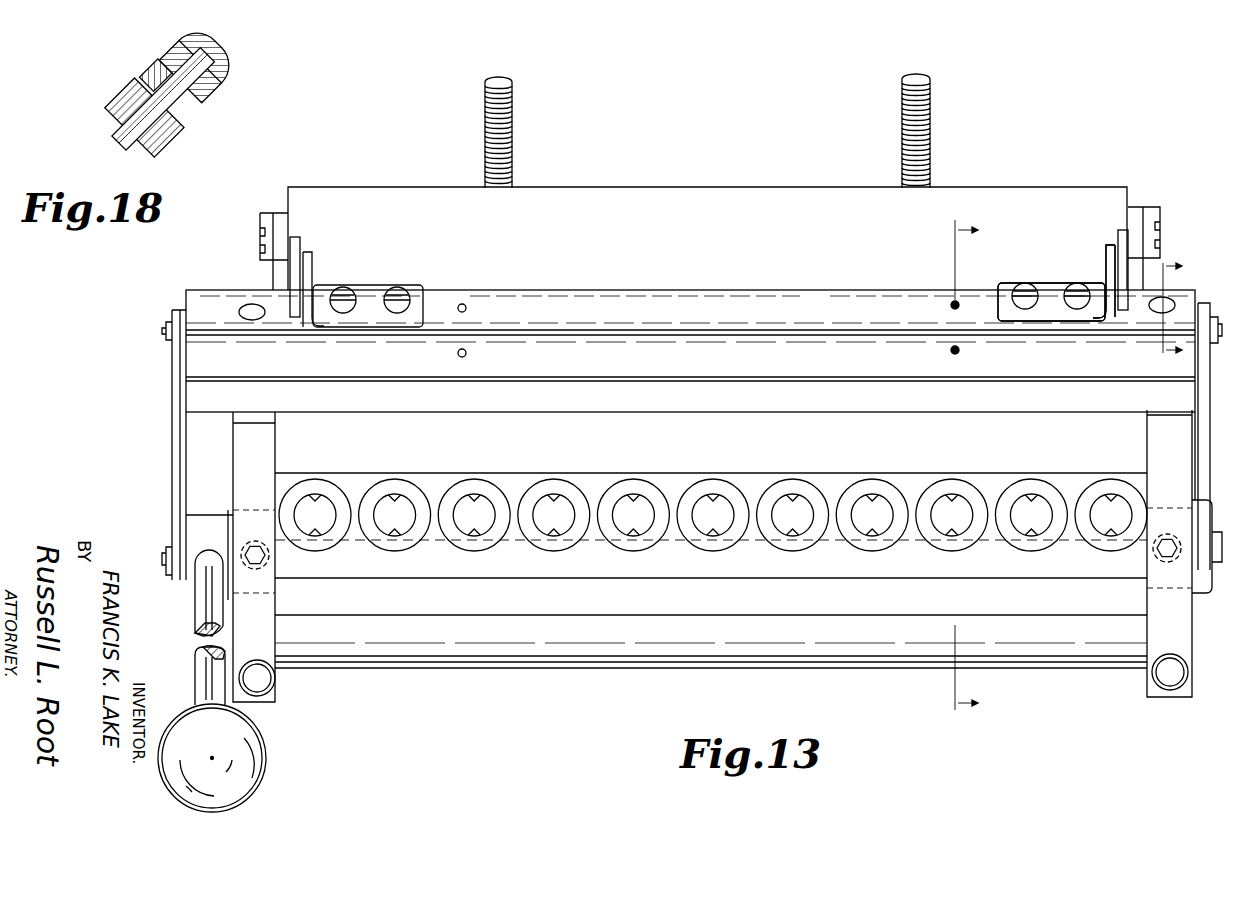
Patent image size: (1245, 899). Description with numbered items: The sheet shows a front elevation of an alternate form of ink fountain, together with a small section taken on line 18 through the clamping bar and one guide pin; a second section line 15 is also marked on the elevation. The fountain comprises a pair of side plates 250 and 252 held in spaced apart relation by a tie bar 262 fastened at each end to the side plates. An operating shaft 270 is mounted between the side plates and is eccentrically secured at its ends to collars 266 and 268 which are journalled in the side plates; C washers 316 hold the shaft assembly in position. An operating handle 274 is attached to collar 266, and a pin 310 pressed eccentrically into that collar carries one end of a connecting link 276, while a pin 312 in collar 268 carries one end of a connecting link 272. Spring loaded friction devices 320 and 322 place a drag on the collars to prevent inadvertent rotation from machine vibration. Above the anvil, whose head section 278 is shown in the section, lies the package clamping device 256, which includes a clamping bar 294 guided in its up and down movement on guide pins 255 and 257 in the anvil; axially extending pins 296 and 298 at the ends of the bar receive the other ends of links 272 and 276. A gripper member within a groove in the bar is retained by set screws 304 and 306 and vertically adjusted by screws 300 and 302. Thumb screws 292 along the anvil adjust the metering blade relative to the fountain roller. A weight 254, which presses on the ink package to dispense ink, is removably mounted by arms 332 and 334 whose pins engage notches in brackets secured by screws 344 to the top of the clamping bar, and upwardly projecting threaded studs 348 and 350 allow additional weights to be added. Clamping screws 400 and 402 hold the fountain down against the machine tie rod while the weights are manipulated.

In FIG. 13, the section line 15- 15 is at (982, 467).
In FIG. 13, the section line 18- 18 is at (1179, 309).
In FIG. 13, the side plate 250 is at (276, 680).
In FIG. 13, the side plate 252 is at (1148, 687).
In FIG. 13, the weight 254 is at (1006, 187).
In FIG. 13, the guide pin 255 is at (252, 304).
In FIG. 13, the package clamping device 256 is at (1168, 262).
In FIG. 18, the guide pin 257 is at (151, 70).
In FIG. 13, the guide pin 257 is at (1168, 302).
In FIG. 13, the tie bar 262 is at (665, 664).
In FIG. 13, the collar 266 is at (203, 514).
In FIG. 13, the collar 268 is at (1172, 588).
In FIG. 13, the operating shaft 270 is at (568, 574).
In FIG. 13, the connecting link 272 is at (1205, 440).
In FIG. 13, the operating handle 274 is at (200, 686).
In FIG. 13, the connecting link 276 is at (180, 479).
In FIG. 18, the head section 278 is at (128, 95).
In FIG. 13, the thumb screws 292 is at (784, 490).
In FIG. 18, the clamping bar 294 is at (182, 42).
In FIG. 13, the clamping bar 294 is at (760, 290).
In FIG. 13, the pin 296 is at (1222, 326).
In FIG. 13, the pin 298 is at (163, 331).
In FIG. 13, the adjusting screw 300 is at (463, 305).
In FIG. 13, the adjusting screw 302 is at (952, 302).
In FIG. 13, the set screw 304 is at (469, 353).
In FIG. 13, the set screw 306 is at (950, 350).
In FIG. 13, the pin 310 is at (165, 556).
In FIG. 13, the pin 312 is at (1224, 563).
In FIG. 13, the C washers 316 is at (275, 473).
In FIG. 13, the spring loaded friction device 320 is at (262, 570).
In FIG. 13, the spring loaded friction device 322 is at (1160, 566).
In FIG. 13, the arm 332 is at (300, 245).
In FIG. 13, the arm 334 is at (1118, 240).
In FIG. 13, the screws 344 is at (397, 289).
In FIG. 13, the threaded stud 348 is at (513, 98).
In FIG. 13, the threaded stud 350 is at (930, 96).
In FIG. 13, the clamping screw 400 is at (260, 688).
In FIG. 13, the clamping screw 402 is at (1170, 686).